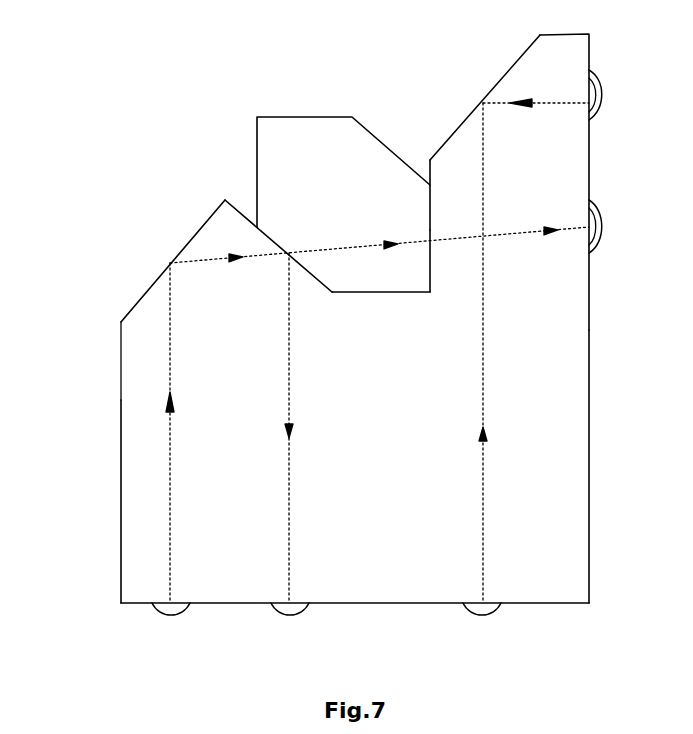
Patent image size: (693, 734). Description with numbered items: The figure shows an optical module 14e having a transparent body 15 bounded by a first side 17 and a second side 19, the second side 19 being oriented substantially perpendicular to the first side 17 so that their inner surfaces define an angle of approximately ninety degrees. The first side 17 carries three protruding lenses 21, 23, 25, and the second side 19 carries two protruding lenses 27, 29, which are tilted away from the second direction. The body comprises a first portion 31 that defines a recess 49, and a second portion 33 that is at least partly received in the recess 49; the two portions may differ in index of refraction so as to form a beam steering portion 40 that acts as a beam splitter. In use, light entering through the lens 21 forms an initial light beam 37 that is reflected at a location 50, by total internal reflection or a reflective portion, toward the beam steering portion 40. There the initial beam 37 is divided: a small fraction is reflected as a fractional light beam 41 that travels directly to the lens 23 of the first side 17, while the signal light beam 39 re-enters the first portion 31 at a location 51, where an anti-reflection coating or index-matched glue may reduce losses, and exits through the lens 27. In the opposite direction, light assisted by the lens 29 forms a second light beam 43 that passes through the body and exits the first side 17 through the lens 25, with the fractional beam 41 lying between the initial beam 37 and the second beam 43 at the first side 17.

The optical module 14e is at (76, 410).
The transparent body 15 is at (118, 481).
The first side 17 is at (400, 604).
The second side 19 is at (590, 422).
The lens 21 is at (170, 616).
The lens 23 is at (290, 615).
The lens 25 is at (482, 613).
The lens 27 is at (600, 240).
The lens 29 is at (598, 78).
The first portion 31 is at (565, 553).
The second portion 33 is at (295, 148).
The initial light beam 37 is at (172, 463).
The signal light beam 39 is at (345, 248).
The beam steering portion 40 is at (271, 230).
The fractional light beam 41 is at (291, 381).
The second light beam 43 is at (550, 100).
The recess 49 is at (430, 176).
The location 50 is at (162, 273).
The location 51 is at (432, 250).